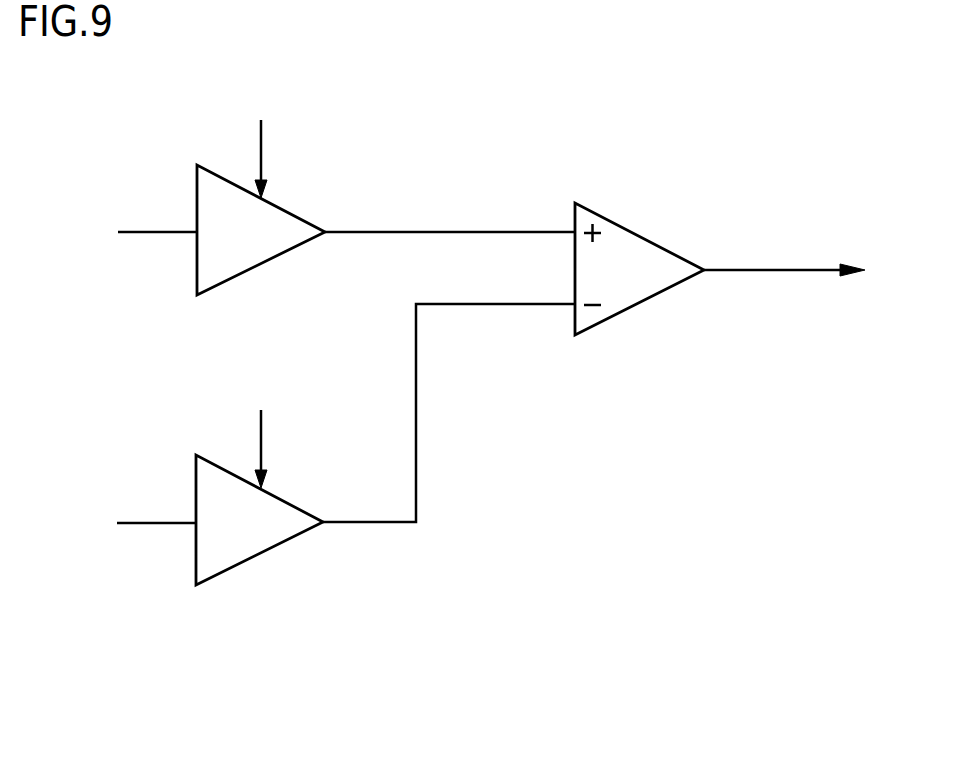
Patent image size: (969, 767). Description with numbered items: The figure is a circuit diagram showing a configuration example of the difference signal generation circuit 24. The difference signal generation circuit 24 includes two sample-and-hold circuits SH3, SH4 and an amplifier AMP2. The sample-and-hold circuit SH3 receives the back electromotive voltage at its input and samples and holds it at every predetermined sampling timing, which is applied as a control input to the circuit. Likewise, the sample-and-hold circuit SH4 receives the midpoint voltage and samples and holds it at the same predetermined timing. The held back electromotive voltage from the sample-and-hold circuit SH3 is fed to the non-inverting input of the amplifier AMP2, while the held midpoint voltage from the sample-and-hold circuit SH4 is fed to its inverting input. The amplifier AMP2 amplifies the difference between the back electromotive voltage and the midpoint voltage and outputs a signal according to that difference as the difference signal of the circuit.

The difference signal generation circuit 24 is at (463, 732).
The sample-and-hold circuit SH3 is at (260, 264).
The sample-and-hold circuit SH4 is at (258, 554).
The amplifier AMP2 is at (638, 302).